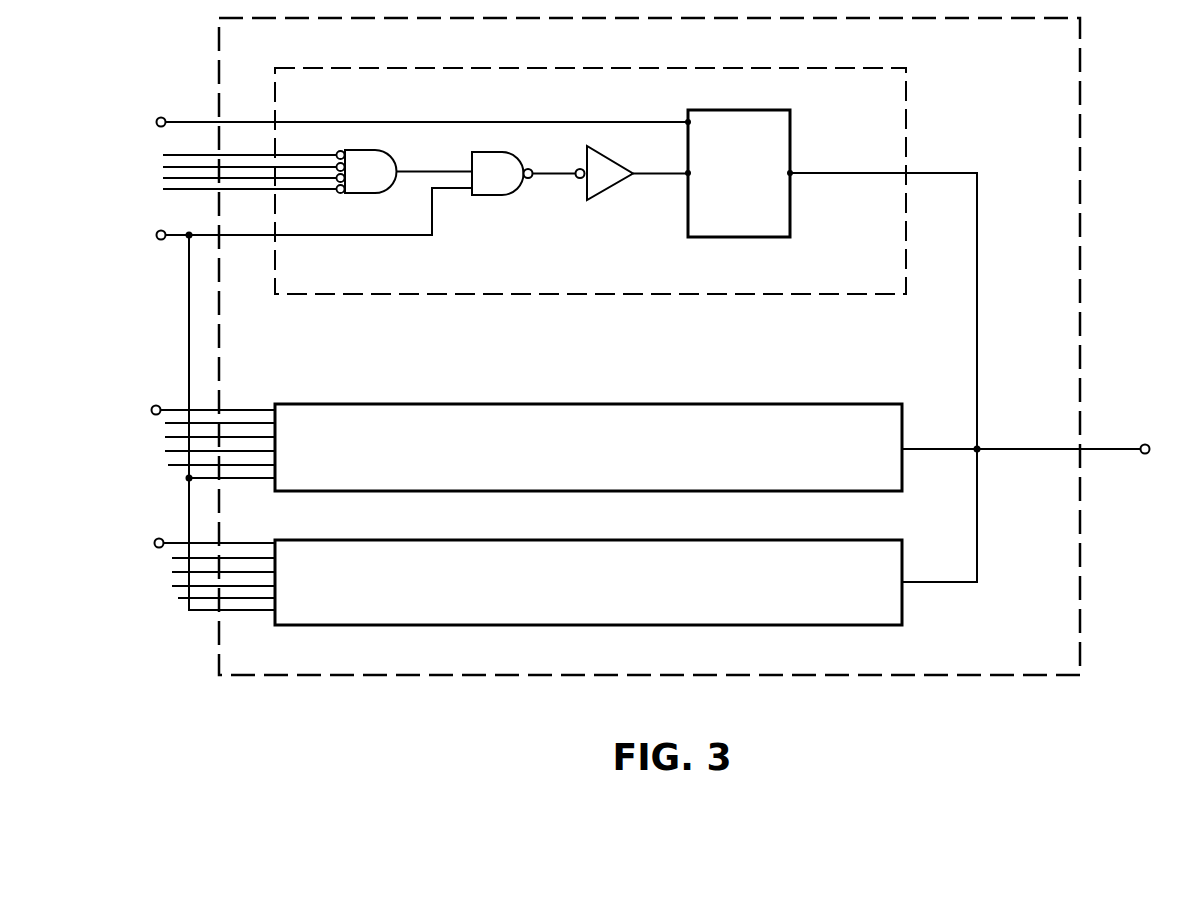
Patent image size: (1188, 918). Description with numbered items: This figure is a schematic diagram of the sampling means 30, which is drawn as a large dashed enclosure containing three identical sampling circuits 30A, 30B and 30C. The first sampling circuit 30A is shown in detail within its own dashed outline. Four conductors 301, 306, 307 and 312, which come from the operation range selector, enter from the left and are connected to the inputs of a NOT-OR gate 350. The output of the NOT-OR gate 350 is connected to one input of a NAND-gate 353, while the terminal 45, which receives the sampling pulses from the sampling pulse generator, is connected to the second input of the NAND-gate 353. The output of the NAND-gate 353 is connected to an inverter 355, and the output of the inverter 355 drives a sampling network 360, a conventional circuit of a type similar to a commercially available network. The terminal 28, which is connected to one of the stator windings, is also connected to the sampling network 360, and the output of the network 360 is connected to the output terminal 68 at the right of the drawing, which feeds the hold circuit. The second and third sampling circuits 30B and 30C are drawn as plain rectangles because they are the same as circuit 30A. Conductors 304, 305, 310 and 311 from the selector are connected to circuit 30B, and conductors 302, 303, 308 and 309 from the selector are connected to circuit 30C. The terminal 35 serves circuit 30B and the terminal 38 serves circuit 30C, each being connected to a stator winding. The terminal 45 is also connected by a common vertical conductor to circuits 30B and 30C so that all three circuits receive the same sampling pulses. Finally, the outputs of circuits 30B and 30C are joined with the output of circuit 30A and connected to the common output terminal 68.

The sampling means 30 is at (1086, 180).
The sampling circuit 30A is at (605, 282).
The sampling circuit 30B is at (608, 475).
The sampling circuit 30C is at (605, 605).
The terminal 28 is at (158, 118).
The conductor 301 is at (180, 153).
The conductor 306 is at (165, 166).
The conductor 307 is at (165, 178).
The conductor 312 is at (183, 191).
The terminal 45 is at (158, 239).
The NOT-OR gate 350 is at (388, 150).
The NAND-gate 353 is at (510, 154).
The inverter 355 is at (616, 158).
The sampling network 360 is at (723, 217).
The output terminal 68 is at (1148, 443).
The terminal 35 is at (153, 404).
The conductor 305 is at (165, 423).
The conductor 304 is at (165, 437).
The conductor 310 is at (165, 451).
The conductor 311 is at (168, 466).
The terminal 38 is at (156, 540).
The conductor 302 is at (172, 558).
The conductor 303 is at (172, 573).
The conductor 308 is at (172, 587).
The conductor 309 is at (178, 599).